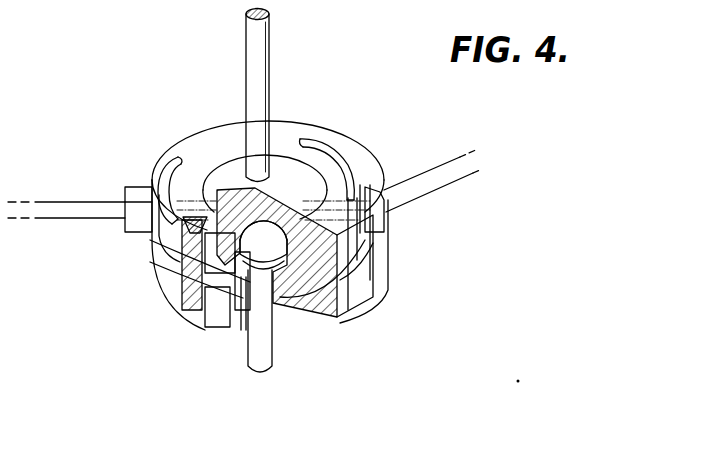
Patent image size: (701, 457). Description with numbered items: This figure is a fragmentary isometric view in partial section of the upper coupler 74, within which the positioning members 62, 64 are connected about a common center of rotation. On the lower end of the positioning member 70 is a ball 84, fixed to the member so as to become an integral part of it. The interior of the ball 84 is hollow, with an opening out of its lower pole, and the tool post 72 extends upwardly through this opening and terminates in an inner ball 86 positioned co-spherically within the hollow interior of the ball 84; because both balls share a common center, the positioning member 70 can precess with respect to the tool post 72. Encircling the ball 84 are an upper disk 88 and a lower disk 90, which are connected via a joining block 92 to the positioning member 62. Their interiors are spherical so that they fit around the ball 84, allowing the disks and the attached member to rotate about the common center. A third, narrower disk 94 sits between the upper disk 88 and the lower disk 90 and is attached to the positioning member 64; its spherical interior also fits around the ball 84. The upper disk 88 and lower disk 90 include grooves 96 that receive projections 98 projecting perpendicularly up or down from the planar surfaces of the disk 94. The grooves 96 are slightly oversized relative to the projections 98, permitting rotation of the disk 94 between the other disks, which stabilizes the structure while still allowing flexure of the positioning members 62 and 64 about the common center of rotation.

The positioning member 62 is at (80, 206).
The positioning member 64 is at (425, 190).
The positioning member 70 is at (262, 43).
The tool post 72 is at (268, 342).
The upper coupler 74 is at (200, 60).
The ball 84 is at (273, 200).
The inner ball 86 is at (305, 303).
The upper disk 88 is at (283, 135).
The lower disk 90 is at (360, 297).
The joining block 92 is at (133, 227).
The disk 94 is at (366, 250).
The grooves 96 is at (170, 158).
The projections 98 is at (374, 193).